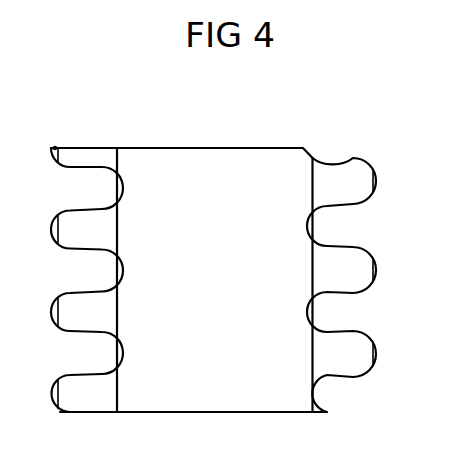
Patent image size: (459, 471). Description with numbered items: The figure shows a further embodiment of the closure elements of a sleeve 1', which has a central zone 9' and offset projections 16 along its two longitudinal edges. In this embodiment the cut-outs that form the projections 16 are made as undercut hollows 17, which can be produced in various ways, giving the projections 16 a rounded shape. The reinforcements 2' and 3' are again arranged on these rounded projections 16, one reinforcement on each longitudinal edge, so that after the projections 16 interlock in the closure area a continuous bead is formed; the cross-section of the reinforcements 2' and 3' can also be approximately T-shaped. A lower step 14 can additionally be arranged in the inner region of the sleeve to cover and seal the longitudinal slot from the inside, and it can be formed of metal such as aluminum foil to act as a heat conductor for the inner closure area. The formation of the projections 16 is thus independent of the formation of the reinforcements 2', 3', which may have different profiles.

The sleeve 1' is at (182, 256).
The reinforcement 2' is at (87, 255).
The reinforcement 3' is at (353, 265).
The central zone 9' is at (193, 142).
The lower step 14 is at (377, 178).
The projection 16 is at (56, 147).
The undercut hollow 17 is at (95, 182).